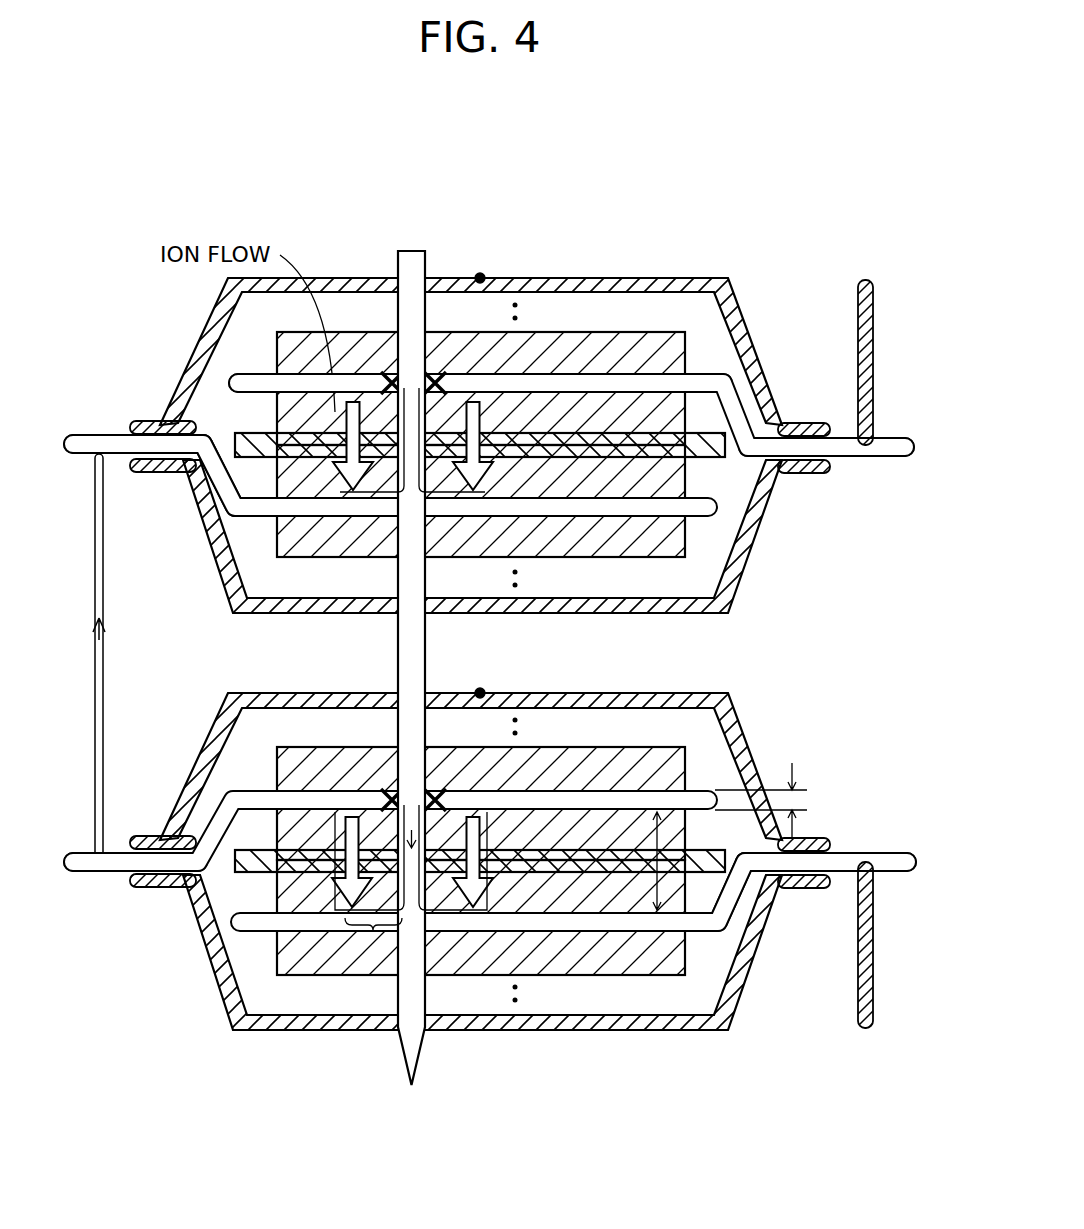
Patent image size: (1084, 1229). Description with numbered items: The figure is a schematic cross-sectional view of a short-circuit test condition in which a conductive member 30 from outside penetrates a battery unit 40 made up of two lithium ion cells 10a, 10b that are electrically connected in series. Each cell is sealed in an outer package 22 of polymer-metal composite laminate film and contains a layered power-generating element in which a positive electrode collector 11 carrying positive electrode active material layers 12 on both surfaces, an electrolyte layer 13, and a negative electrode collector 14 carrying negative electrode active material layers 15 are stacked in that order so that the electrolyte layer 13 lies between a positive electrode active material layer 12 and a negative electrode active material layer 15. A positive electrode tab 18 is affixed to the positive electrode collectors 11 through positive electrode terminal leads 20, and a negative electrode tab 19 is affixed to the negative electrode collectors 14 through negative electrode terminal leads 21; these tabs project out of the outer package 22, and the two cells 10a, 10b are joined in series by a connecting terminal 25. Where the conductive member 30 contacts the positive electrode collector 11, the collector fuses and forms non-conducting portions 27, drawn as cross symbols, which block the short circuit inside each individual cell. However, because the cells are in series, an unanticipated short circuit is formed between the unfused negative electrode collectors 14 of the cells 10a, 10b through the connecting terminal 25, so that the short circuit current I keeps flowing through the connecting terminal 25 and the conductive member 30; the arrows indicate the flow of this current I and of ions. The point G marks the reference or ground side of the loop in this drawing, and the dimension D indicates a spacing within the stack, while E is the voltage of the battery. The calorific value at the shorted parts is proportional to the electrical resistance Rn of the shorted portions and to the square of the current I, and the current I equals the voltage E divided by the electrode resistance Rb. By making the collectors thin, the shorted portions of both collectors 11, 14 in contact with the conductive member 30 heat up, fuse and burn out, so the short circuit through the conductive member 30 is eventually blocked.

The battery unit 40 is at (590, 99).
The lithium ion cell 10a is at (743, 309).
The lithium ion cell 10b is at (735, 719).
The positive electrode collector 11 is at (245, 382).
The positive electrode active material layer 12 is at (655, 340).
The electrolyte layer 13 is at (240, 438).
The negative electrode collector 14 is at (706, 510).
The negative electrode active material layer 15 is at (645, 555).
The positive electrode tab 18 is at (878, 458).
The negative electrode tab 19 is at (100, 438).
The positive electrode terminal lead 20 is at (735, 400).
The negative electrode terminal lead 21 is at (220, 500).
The outer package 22 is at (807, 424).
The connecting terminal 25 is at (875, 335).
The non-conducting portion 27 is at (390, 378).
The conductive member 30 is at (411, 262).
The ground G is at (481, 274).
The short circuit current I is at (93, 580).
The distance D is at (771, 800).
The voltage of the battery E is at (665, 861).
The electrode resistance Rb is at (300, 860).
The electrical resistance of the shorted portions Rn is at (373, 932).